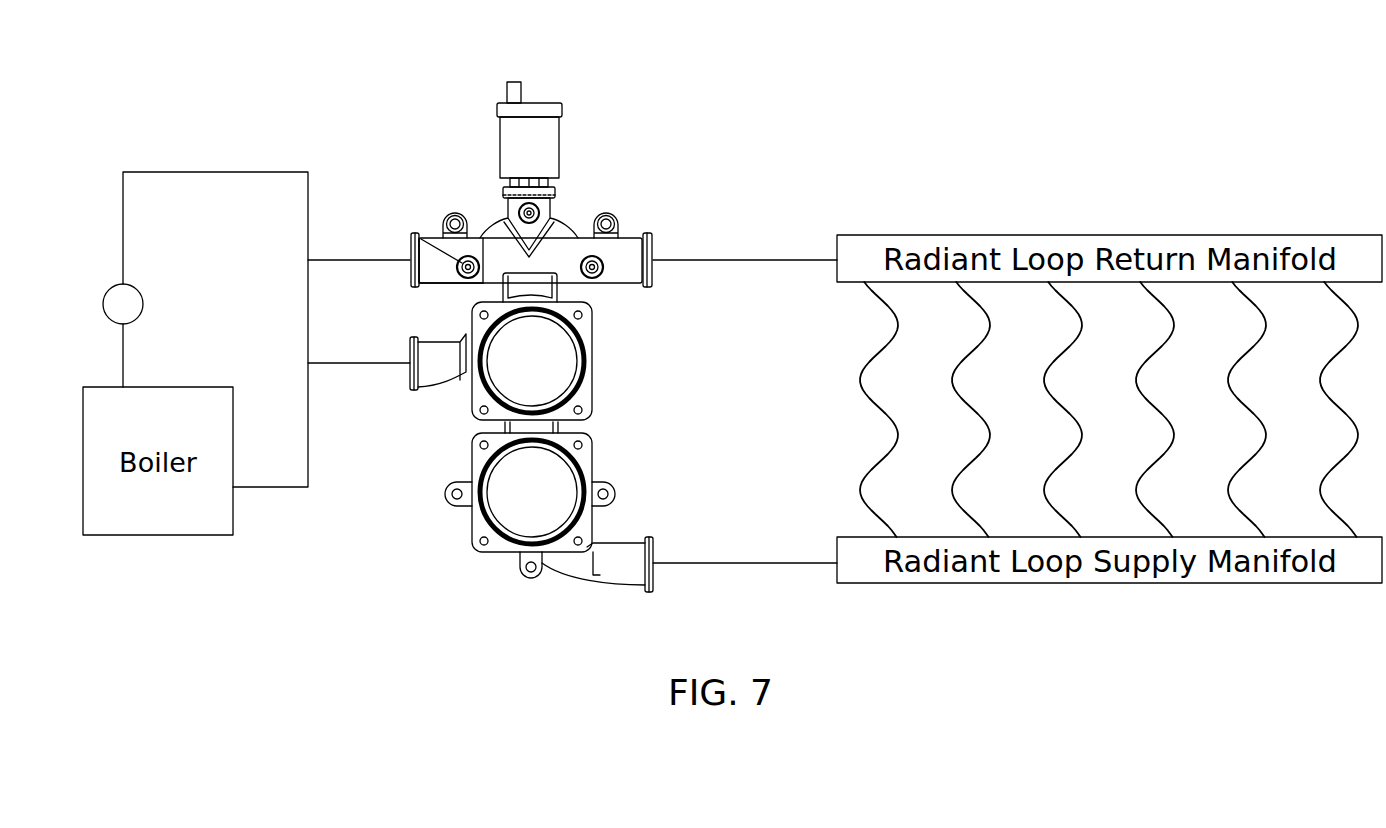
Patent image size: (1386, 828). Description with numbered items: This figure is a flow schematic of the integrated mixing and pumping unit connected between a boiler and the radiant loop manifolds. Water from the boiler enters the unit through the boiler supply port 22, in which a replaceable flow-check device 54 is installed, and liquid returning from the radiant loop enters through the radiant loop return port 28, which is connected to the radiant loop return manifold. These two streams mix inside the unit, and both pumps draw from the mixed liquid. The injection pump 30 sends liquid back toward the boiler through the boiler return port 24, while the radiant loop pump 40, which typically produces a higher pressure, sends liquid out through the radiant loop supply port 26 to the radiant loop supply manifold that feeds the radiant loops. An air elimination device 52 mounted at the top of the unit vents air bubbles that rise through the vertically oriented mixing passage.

The boiler supply port 22 is at (410, 255).
The boiler return port 24 is at (408, 367).
The radiant loop supply port 26 is at (657, 567).
The radiant loop return port 28 is at (655, 253).
The injection pump 30 is at (552, 367).
The radiant loop pump 40 is at (548, 482).
The air elimination device 52 is at (495, 112).
The flow-check device 54 is at (438, 245).